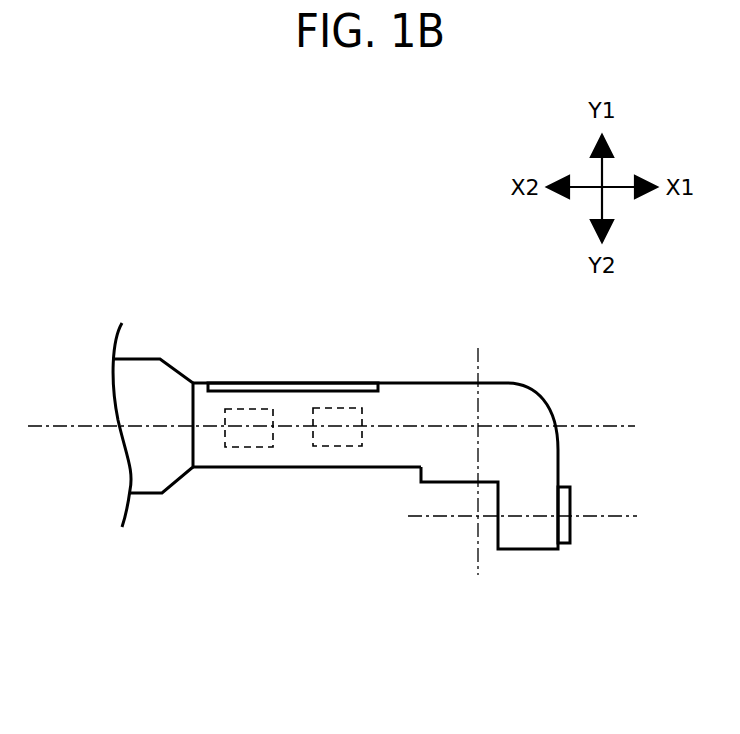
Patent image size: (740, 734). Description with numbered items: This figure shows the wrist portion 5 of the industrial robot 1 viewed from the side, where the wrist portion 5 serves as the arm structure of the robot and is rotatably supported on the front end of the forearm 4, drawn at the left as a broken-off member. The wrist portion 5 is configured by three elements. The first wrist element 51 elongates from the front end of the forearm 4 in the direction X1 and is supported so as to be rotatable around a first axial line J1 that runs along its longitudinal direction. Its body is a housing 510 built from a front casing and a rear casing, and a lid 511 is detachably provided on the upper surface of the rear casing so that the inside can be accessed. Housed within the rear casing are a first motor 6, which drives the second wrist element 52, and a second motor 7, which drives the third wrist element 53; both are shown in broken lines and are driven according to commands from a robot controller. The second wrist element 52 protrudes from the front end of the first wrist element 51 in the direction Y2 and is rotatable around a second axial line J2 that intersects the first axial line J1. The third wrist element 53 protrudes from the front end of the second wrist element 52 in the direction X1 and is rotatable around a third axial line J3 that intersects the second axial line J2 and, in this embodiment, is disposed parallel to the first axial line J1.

The industrial robot 1 is at (225, 228).
The forearm 4 is at (157, 339).
The wrist portion 5 is at (351, 286).
The housing 510 is at (324, 467).
The lid 511 is at (295, 384).
The first wrist element 51 is at (533, 372).
The second wrist element 52 is at (526, 569).
The third wrist element 53 is at (587, 547).
The first motor 6 is at (242, 409).
The second motor 7 is at (347, 408).
The first axial line J1 is at (348, 427).
The second axial line J2 is at (477, 447).
The third axial line J3 is at (538, 517).